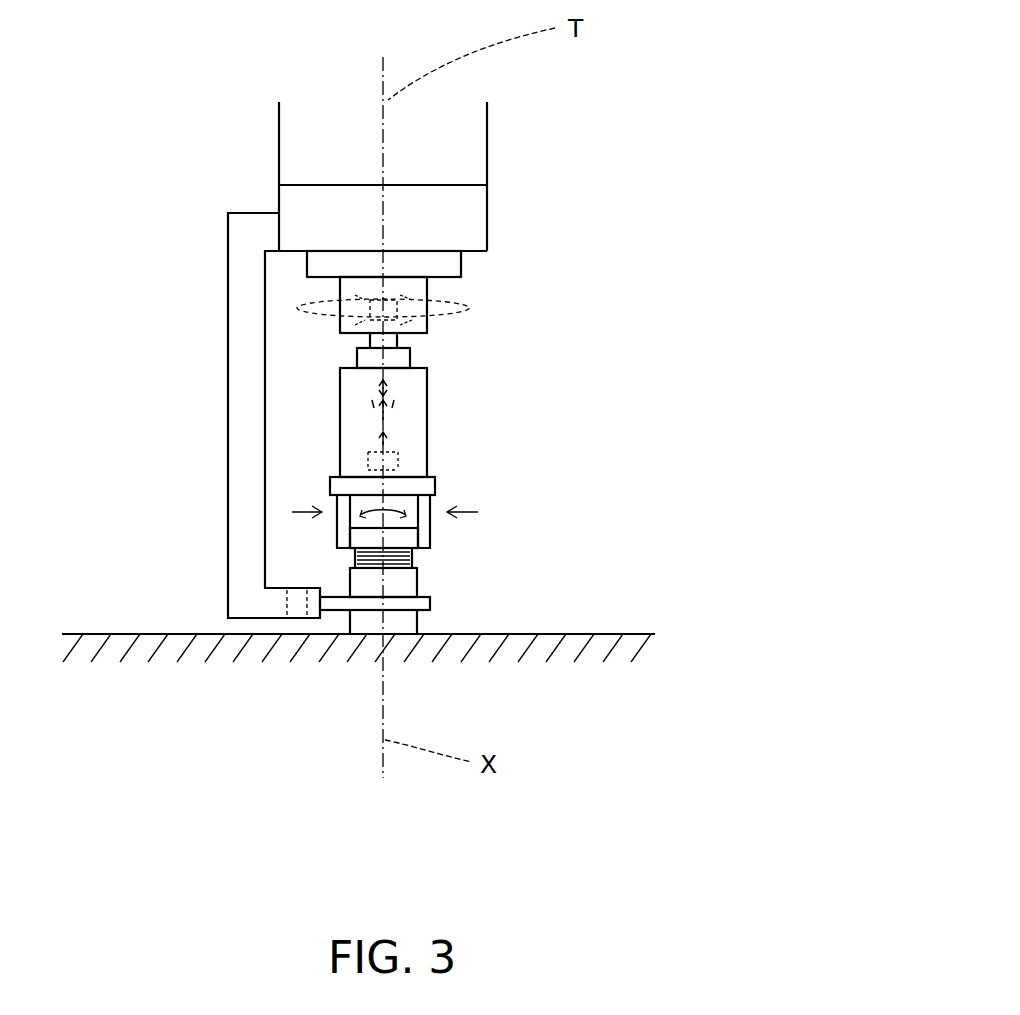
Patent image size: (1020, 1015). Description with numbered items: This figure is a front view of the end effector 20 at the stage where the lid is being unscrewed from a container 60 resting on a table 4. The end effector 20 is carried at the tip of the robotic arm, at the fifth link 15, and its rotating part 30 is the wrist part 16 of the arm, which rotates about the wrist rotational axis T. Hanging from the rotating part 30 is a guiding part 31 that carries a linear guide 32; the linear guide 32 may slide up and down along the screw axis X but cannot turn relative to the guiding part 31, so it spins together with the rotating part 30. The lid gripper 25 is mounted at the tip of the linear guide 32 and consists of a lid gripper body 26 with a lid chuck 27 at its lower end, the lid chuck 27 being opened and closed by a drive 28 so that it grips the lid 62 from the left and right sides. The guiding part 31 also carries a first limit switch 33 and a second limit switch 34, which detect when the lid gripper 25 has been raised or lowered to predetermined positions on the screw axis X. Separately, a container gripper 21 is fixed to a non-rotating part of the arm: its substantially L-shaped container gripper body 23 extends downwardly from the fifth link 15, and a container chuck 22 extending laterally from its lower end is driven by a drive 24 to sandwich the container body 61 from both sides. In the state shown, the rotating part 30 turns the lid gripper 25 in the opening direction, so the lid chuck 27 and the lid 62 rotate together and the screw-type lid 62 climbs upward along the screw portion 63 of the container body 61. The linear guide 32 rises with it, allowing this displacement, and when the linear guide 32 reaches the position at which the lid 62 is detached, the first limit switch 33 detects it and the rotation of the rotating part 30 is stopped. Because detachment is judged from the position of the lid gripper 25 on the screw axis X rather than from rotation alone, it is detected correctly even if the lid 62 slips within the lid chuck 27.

The table 4 is at (112, 633).
The fifth link 15 is at (300, 150).
The wrist part 16 is at (501, 241).
The end effector 20 is at (676, 340).
The container gripper 21 is at (272, 622).
The container chuck 22 is at (367, 606).
The container gripper body 23 is at (247, 438).
The drive 24 is at (302, 590).
The lid gripper 25 is at (432, 428).
The lid gripper body 26 is at (352, 410).
The lid chuck 27 is at (433, 500).
The drive 28 is at (370, 465).
The rotating part 30 is at (443, 262).
The guiding part 31 is at (428, 288).
The linear guide 32 is at (412, 342).
The first limit switch 33 is at (465, 300).
The second limit switch 34 is at (400, 320).
The container 60 is at (596, 518).
The container body 61 is at (420, 587).
The lid 62 is at (420, 535).
The screw portion 63 is at (420, 558).